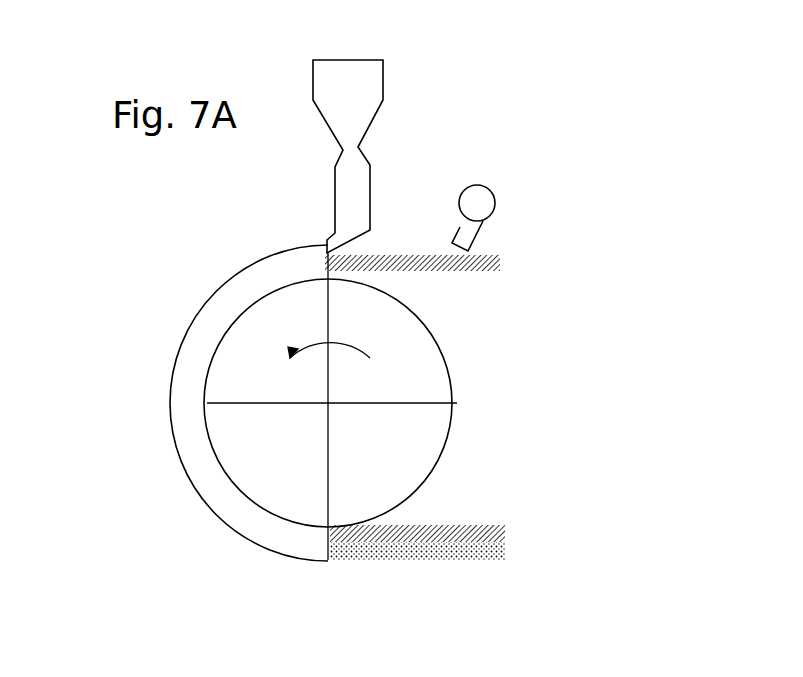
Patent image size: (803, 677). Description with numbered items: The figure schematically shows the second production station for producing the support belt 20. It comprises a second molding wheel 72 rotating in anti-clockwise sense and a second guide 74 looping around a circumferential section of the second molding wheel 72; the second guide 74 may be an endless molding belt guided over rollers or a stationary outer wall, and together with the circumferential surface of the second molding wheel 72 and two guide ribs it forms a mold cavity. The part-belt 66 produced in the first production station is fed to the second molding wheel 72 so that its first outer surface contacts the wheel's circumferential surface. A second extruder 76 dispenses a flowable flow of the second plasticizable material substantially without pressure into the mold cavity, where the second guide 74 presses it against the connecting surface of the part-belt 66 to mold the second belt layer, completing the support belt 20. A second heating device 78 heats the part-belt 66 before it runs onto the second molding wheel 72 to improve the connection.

The second extruder 76 is at (360, 120).
The second heating device 78 is at (477, 200).
The part-belt 66 is at (460, 270).
The second guide 74 is at (235, 298).
The second molding wheel 72 is at (428, 382).
The support belt 20 is at (480, 537).